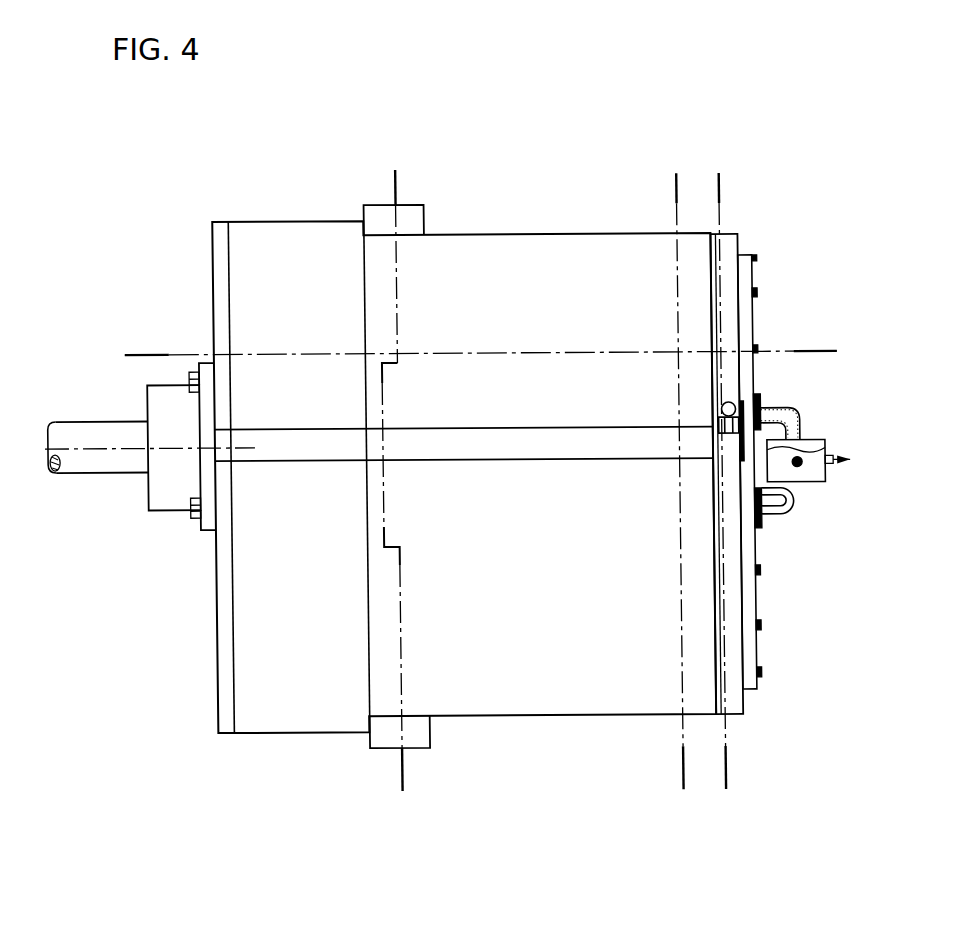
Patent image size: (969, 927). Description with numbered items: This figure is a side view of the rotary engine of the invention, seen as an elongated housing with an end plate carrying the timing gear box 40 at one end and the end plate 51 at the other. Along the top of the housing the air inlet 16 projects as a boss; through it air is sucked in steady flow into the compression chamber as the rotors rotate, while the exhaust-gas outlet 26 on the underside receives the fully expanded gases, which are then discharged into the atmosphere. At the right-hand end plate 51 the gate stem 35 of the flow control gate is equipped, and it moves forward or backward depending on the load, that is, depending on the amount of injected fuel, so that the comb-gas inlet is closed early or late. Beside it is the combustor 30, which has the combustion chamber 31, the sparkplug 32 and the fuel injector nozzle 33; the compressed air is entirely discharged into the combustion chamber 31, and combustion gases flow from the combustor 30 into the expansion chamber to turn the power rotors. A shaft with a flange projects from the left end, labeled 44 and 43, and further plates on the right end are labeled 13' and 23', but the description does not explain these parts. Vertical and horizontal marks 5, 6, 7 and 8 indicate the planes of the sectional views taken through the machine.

The timing gear box 40 is at (294, 736).
The air inlet 16 is at (386, 203).
The exhaust-gas outlet 26 is at (384, 752).
The output shaft and hub 44 is at (132, 410).
The mounting flange 43 is at (162, 515).
The end plate 51 is at (746, 240).
The end cover 13' is at (804, 441).
The cover fastening bolts 23' is at (808, 613).
The gate stem 35 is at (710, 409).
The combustor 30 is at (830, 430).
The combustion chamber 31 is at (808, 439).
The sparkplug 32 is at (840, 471).
The fuel injector nozzle 33 is at (800, 468).
The section line 5- 5 is at (152, 298).
The section line 6- 6 is at (462, 186).
The section line 7- 7 is at (625, 190).
The section line 8- 8 is at (775, 191).